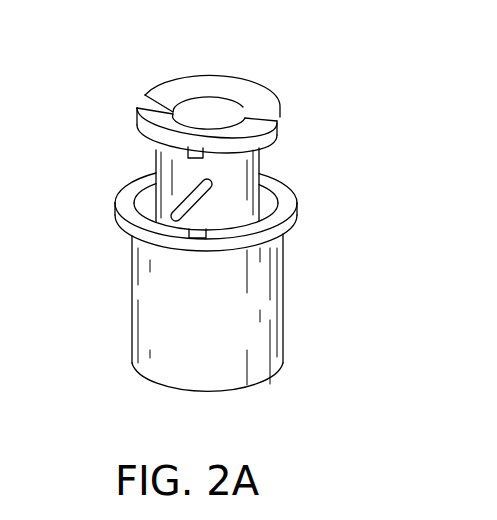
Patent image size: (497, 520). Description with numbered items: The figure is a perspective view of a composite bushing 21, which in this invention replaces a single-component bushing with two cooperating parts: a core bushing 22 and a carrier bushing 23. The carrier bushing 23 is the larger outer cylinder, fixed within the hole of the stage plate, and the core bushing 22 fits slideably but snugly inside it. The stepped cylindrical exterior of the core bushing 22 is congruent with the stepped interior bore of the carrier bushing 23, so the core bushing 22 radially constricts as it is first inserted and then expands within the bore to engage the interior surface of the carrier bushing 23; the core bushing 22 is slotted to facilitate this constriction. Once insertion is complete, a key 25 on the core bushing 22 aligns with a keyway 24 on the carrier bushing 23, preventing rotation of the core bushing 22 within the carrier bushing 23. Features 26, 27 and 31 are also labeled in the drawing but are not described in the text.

The composite bushing 21 is at (350, 73).
The core bushing 22 is at (123, 93).
The carrier bushing 23 is at (302, 303).
The keyway 24 is at (189, 233).
The key 25 is at (190, 156).
The central opening of cap 26 is at (268, 106).
The annular flange 27 is at (293, 205).
The slot 31 is at (190, 203).